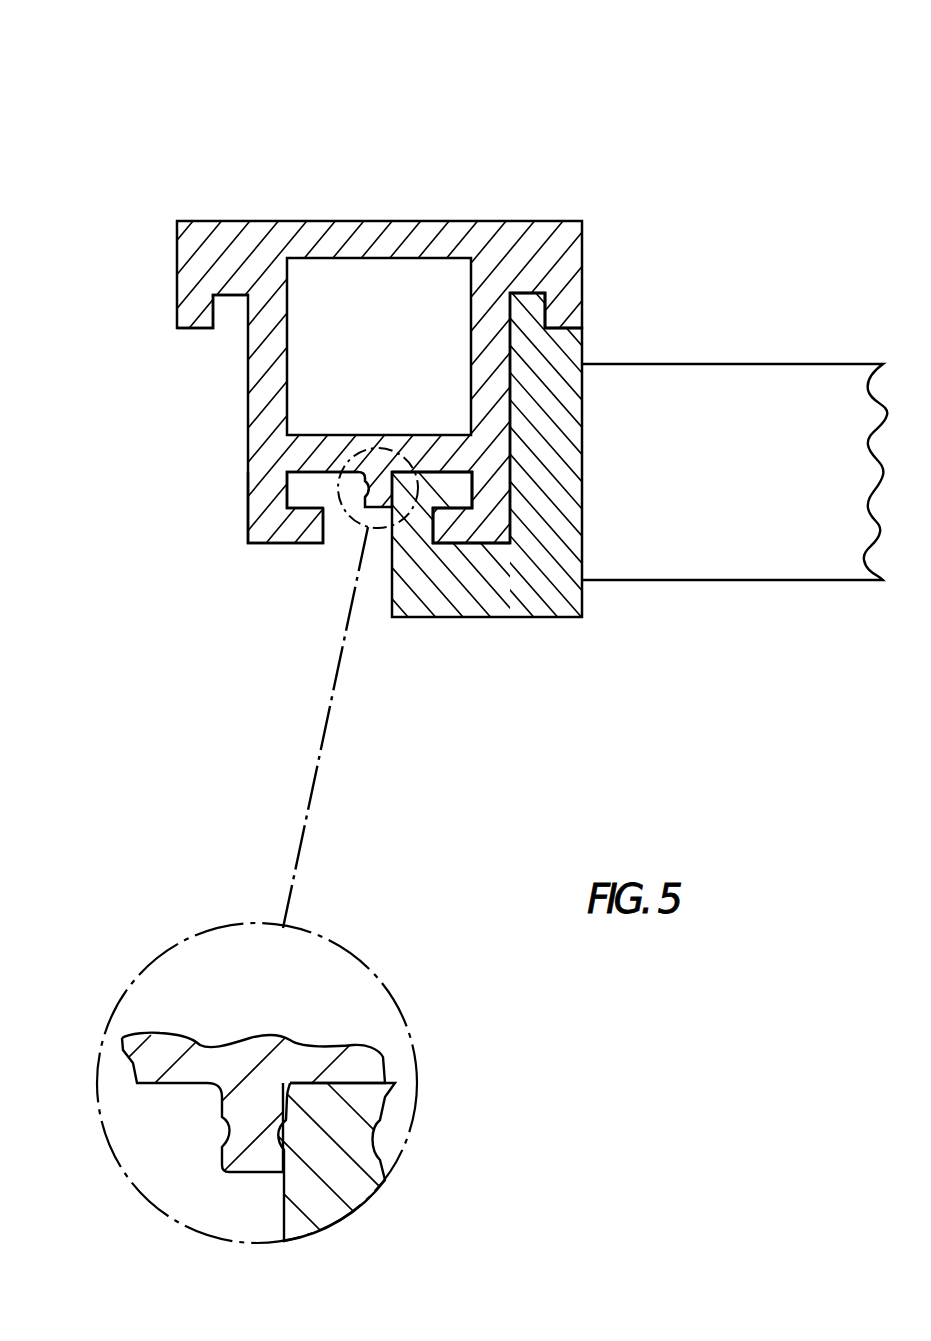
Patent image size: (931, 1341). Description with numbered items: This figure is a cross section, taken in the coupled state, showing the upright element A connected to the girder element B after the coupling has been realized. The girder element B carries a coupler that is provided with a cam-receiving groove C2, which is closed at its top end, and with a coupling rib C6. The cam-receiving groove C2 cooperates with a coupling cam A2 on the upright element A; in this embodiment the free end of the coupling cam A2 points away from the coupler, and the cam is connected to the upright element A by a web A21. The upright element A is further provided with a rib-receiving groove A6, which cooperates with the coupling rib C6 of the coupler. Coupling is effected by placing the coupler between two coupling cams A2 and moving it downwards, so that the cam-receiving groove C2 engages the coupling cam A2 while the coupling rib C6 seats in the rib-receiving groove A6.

The upright element A is at (405, 192).
The coupling cam A2 is at (307, 553).
The rib-receiving groove A6 is at (233, 305).
The web A21 is at (247, 530).
The girder element B is at (708, 390).
The cam-receiving groove C2 is at (442, 528).
The coupling rib C6 is at (537, 303).